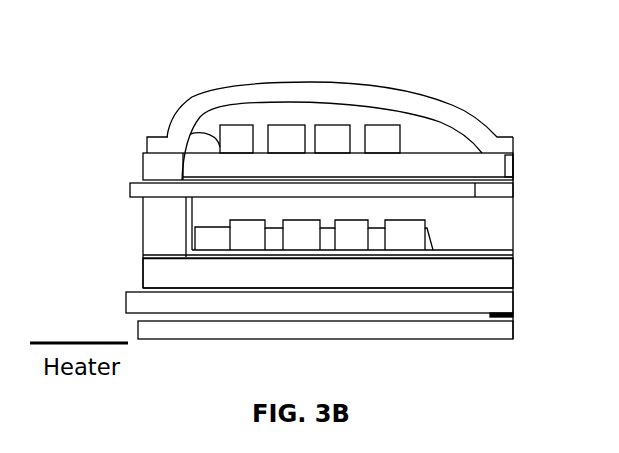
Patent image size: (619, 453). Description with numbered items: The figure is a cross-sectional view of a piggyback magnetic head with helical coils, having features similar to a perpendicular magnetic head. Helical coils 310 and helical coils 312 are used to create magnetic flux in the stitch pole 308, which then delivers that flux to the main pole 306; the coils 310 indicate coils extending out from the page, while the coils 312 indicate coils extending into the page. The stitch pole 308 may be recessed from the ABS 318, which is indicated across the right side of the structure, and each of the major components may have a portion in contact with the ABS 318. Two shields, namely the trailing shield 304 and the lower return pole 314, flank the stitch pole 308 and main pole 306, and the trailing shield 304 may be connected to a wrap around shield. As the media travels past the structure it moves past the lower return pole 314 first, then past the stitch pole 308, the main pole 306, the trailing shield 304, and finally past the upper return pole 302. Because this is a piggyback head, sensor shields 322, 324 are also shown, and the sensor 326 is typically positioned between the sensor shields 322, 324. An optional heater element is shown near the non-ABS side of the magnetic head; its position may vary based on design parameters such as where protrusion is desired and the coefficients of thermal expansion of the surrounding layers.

The upper return pole 302 is at (453, 108).
The trailing shield 304 is at (515, 167).
The main pole 306 is at (515, 190).
The stitch pole 308 is at (468, 197).
The helical coils 310 is at (168, 136).
The helical coils 312 is at (233, 220).
The lower return pole 314 is at (362, 281).
The ABS 318 is at (513, 262).
The sensor shield 322 is at (127, 305).
The sensor shield 324 is at (139, 331).
The sensor 326 is at (505, 316).